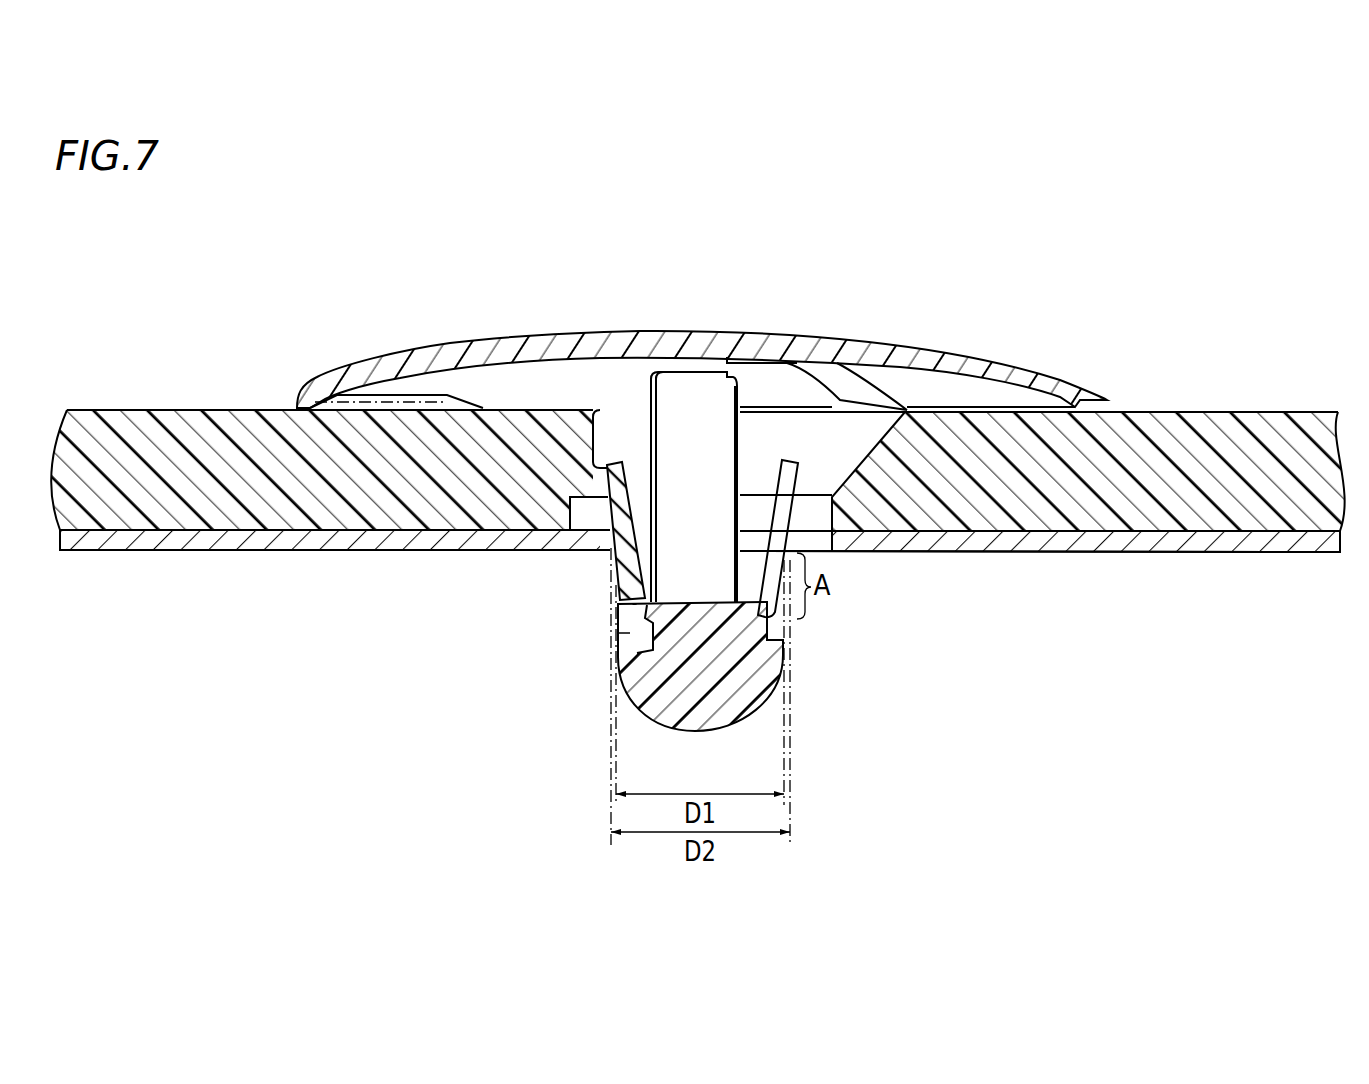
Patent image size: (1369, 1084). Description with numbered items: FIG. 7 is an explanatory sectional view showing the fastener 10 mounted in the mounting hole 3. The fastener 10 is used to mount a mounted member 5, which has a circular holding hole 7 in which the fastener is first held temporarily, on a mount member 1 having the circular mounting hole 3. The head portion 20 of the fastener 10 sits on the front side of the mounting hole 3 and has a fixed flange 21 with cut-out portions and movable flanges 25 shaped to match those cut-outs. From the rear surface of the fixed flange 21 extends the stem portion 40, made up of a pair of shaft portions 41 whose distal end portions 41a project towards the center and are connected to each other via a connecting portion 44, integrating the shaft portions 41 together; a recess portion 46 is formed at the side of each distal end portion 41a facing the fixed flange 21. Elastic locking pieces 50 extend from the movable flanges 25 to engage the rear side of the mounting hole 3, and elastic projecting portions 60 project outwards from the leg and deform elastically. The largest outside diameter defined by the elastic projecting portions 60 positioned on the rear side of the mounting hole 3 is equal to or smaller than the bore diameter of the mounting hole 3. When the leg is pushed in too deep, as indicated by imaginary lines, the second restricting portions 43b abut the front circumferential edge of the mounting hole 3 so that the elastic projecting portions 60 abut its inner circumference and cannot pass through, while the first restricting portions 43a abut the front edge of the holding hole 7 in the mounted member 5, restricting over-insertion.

The mount member 1 is at (1242, 550).
The mounting hole 3 is at (838, 541).
The mounted member 5 is at (1258, 432).
The holding hole 7 is at (826, 518).
The fastener 10 is at (702, 459).
The head portion 20 is at (702, 349).
The fixed flange 21 is at (653, 347).
The movable flange 25 is at (855, 392).
The stem portion 40 is at (599, 493).
The shaft portion 41 is at (662, 447).
The distal end portion 41a is at (620, 633).
The first restricting portion 43a is at (487, 393).
The second restricting portion 43b is at (602, 447).
The connecting portion 44 is at (705, 604).
The recess portion 46 is at (625, 632).
The elastic locking piece 50 is at (722, 397).
The elastic projecting portion 60 is at (612, 460).